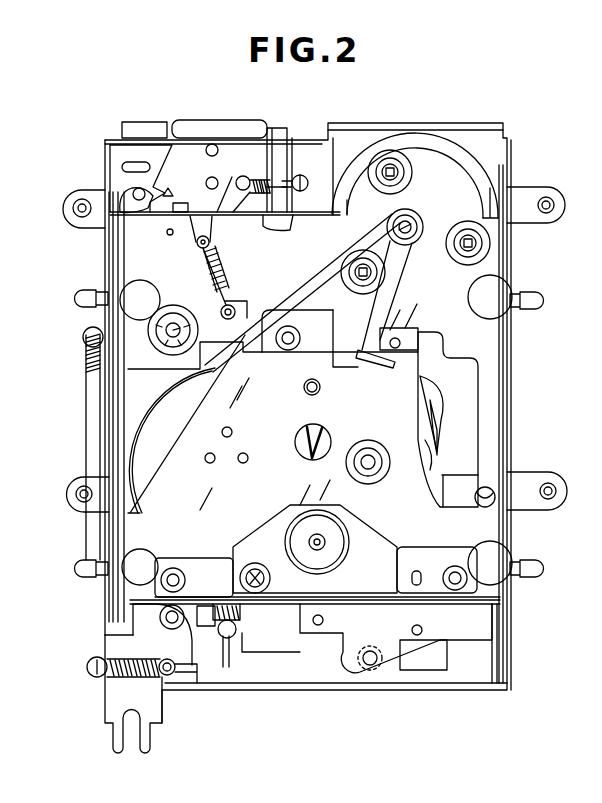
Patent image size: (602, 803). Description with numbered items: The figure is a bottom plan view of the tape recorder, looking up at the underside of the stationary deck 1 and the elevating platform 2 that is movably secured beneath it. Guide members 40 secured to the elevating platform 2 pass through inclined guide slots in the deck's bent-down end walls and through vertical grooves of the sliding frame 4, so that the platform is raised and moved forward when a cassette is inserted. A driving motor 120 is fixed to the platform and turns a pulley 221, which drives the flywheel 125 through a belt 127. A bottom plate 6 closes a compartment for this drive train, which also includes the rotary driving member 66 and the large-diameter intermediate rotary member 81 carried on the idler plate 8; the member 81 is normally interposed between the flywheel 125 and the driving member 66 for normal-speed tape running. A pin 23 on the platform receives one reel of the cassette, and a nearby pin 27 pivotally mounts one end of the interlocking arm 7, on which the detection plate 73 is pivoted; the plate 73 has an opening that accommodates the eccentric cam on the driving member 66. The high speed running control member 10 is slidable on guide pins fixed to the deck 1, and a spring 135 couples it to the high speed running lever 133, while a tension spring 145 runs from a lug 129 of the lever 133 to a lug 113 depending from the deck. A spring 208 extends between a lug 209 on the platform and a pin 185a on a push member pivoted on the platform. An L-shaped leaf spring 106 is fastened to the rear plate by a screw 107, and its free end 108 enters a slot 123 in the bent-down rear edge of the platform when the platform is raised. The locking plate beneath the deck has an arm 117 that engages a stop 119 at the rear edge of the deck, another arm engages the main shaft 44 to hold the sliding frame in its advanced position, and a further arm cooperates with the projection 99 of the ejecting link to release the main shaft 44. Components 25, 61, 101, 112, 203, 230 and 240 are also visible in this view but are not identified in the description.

The stationary deck 1 is at (516, 270).
The elevating platform 2 is at (510, 338).
The sliding frame 4 is at (102, 274).
The bottom plate 6 is at (345, 374).
The interlocking arm 7 is at (430, 425).
The idler plate 8 is at (334, 583).
The high speed running control member 10 is at (161, 716).
The pin 23 is at (373, 672).
The gear 25 is at (185, 318).
The pin 27 is at (252, 563).
The guide members 40 is at (96, 305).
The main shaft 44 is at (180, 330).
The screw 61 is at (373, 452).
The rotary driving member 66 is at (425, 462).
The detection plate 73 is at (438, 394).
The intermediate rotary member 81 is at (318, 522).
The projection 99 is at (135, 190).
The spring 101 is at (86, 375).
The leaf spring 106 is at (296, 136).
The screw 107 is at (275, 126).
The free end 108 is at (277, 190).
The mounting tab 112 is at (80, 222).
The lug 113 is at (82, 688).
The arm 117 is at (165, 165).
The stop 119 is at (242, 176).
The driving motor 120 is at (435, 155).
The slot 123 is at (260, 230).
The flywheel 125 is at (155, 466).
The belt 127 is at (300, 283).
The lug 129 is at (172, 661).
The high speed running lever 133 is at (258, 660).
The spring 135 is at (240, 614).
The tension spring 145 is at (133, 683).
The pin 185a is at (210, 242).
The hole 203 is at (204, 272).
The spring 208 is at (216, 275).
The lug 209 is at (254, 298).
The pulley 221 is at (419, 222).
The arch 230 is at (336, 205).
The screw 240 is at (82, 295).